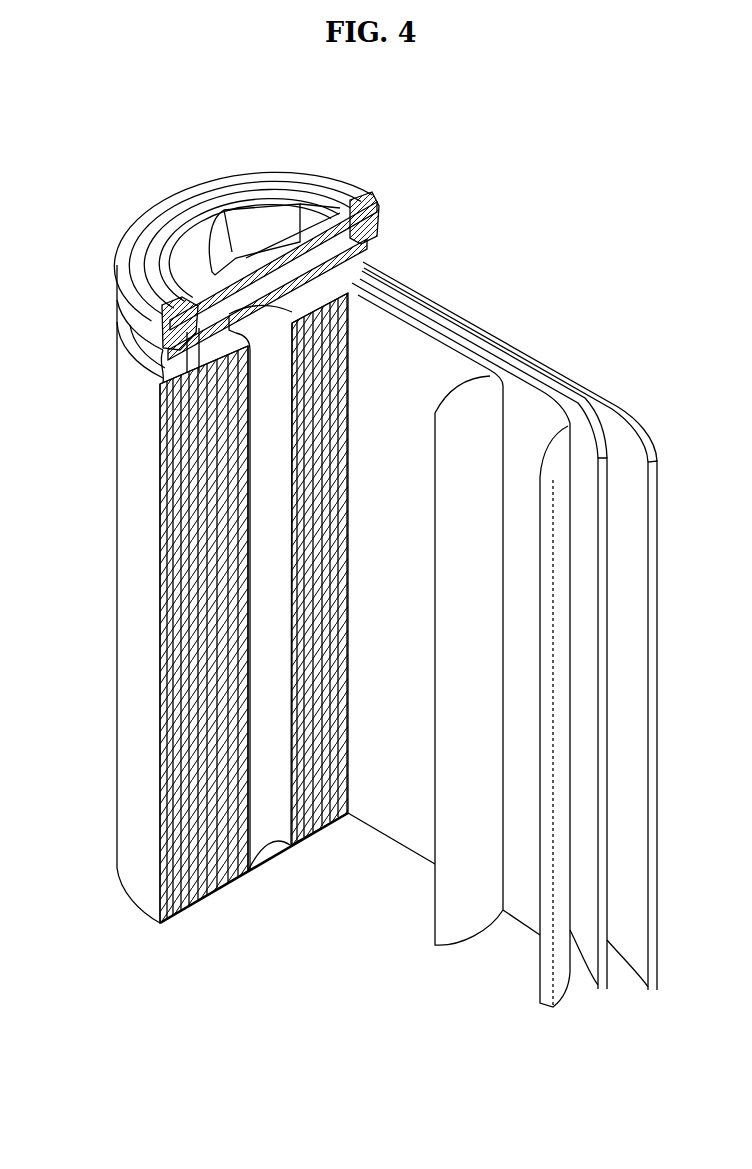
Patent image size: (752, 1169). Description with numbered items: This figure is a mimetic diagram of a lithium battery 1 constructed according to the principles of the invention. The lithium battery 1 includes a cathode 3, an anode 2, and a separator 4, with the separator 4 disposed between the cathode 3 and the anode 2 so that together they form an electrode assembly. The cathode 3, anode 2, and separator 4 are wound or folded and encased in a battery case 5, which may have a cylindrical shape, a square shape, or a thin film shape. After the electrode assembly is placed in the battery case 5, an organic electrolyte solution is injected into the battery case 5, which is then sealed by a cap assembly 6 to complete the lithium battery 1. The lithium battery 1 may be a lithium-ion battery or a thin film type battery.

The lithium battery 1 is at (520, 193).
The anode 2 is at (636, 425).
The cathode 3 is at (560, 422).
The separator 4 is at (470, 413).
The battery case 5 is at (120, 596).
The cap assembly 6 is at (241, 217).